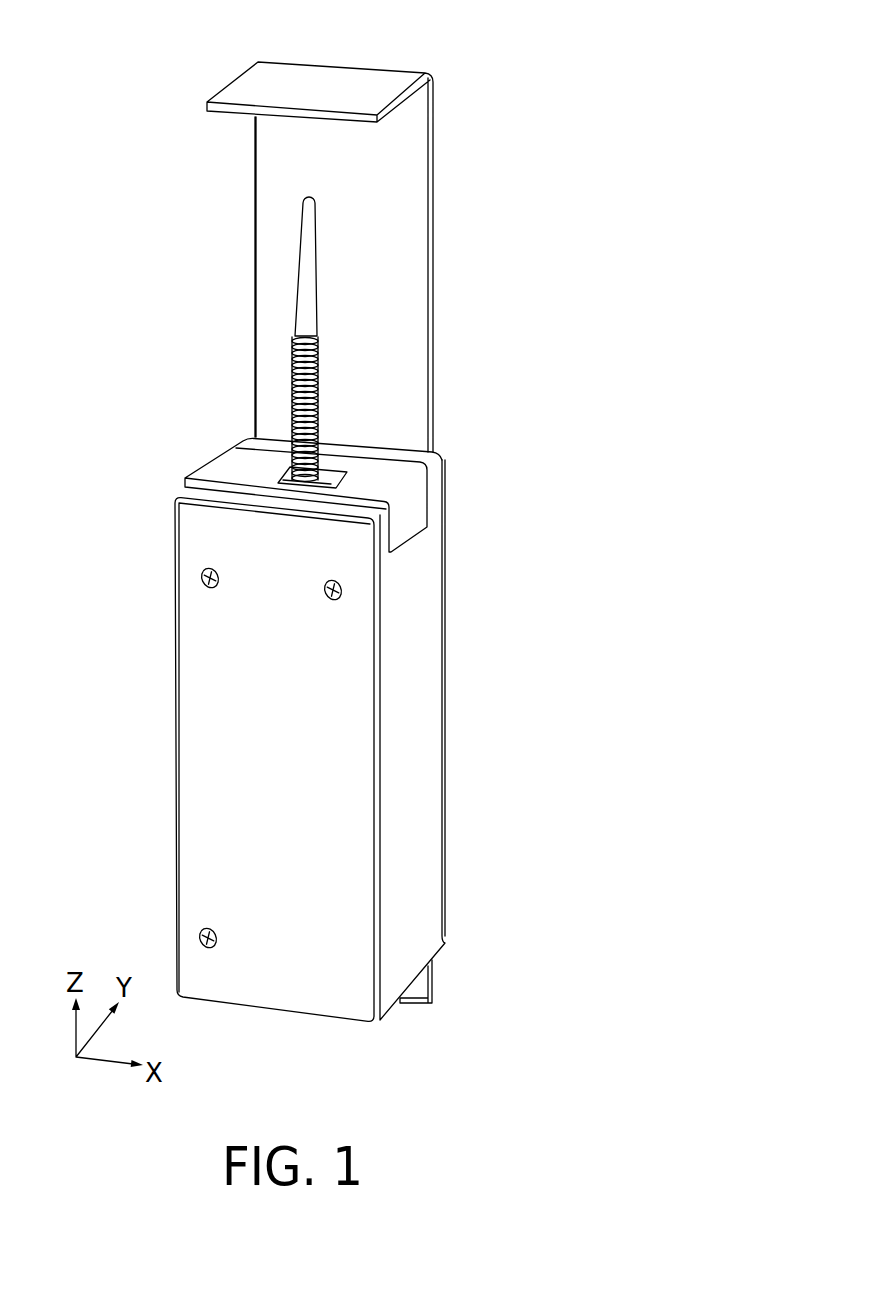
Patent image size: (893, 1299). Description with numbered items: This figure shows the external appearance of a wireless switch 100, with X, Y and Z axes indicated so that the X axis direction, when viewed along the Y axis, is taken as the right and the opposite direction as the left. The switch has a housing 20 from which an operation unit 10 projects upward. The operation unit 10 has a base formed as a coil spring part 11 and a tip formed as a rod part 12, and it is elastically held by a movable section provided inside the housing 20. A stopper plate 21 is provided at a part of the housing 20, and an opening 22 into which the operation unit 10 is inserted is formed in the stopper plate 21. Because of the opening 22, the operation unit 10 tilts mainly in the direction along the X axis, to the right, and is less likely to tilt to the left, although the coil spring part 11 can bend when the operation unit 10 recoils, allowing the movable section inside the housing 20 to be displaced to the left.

The wireless switch 100 is at (550, 34).
The operation unit 10 is at (386, 300).
The coil spring part 11 is at (327, 340).
The rod part 12 is at (325, 197).
The housing 20 is at (423, 693).
The stopper plate 21 is at (230, 468).
The opening 22 is at (344, 463).